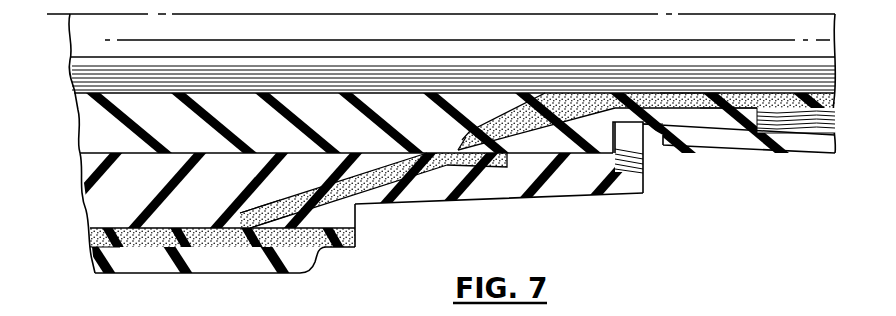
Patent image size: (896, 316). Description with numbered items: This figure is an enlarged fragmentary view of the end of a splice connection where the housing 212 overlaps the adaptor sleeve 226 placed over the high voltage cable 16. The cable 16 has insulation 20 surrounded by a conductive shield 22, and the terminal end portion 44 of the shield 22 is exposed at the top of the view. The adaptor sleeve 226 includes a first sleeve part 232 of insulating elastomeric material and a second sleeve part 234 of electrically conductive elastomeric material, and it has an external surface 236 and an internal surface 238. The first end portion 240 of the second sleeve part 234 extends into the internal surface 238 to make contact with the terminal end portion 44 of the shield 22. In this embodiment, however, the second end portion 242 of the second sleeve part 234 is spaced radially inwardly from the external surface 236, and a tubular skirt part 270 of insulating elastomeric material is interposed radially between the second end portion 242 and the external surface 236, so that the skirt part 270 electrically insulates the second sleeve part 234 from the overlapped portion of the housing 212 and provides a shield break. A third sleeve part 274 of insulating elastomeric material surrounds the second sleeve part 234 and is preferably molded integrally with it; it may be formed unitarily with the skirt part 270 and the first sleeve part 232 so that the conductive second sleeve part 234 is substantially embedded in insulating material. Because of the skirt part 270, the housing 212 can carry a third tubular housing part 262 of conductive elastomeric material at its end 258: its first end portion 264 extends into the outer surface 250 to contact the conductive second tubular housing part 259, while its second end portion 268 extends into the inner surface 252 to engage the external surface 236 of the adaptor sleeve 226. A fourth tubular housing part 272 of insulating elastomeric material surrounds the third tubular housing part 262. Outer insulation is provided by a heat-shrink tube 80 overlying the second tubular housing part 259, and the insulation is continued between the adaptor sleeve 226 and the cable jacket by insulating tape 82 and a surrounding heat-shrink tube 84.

The high voltage cable 16 is at (78, 42).
The insulation 20 is at (838, 40).
The conductive shield 22 is at (838, 100).
The terminal end portion of shield 44 is at (688, 88).
The heat-shrink tube 80 is at (210, 263).
The insulating tape 82 is at (830, 122).
The heat-shrink tube 84 is at (773, 144).
The housing 212 is at (90, 193).
The adaptor sleeve 226 is at (88, 139).
The first sleeve part 232 is at (88, 107).
The second sleeve part 234 is at (524, 112).
The external surface 236 is at (178, 160).
The internal surface 238 is at (118, 92).
The first end portion of second sleeve part 240 is at (723, 110).
The second end portion of second sleeve part 242 is at (475, 136).
The outer surface 250 is at (130, 248).
The inner surface 252 is at (199, 136).
The end of housing 258 is at (360, 228).
The second tubular housing part 259 is at (90, 238).
The third tubular housing part 262 is at (340, 178).
The first end portion of third tubular housing part 264 is at (256, 224).
The second end portion of third tubular housing part 268 is at (456, 160).
The tubular skirt part 270 is at (470, 150).
The fourth tubular housing part 272 is at (606, 188).
The third sleeve part 274 is at (653, 128).